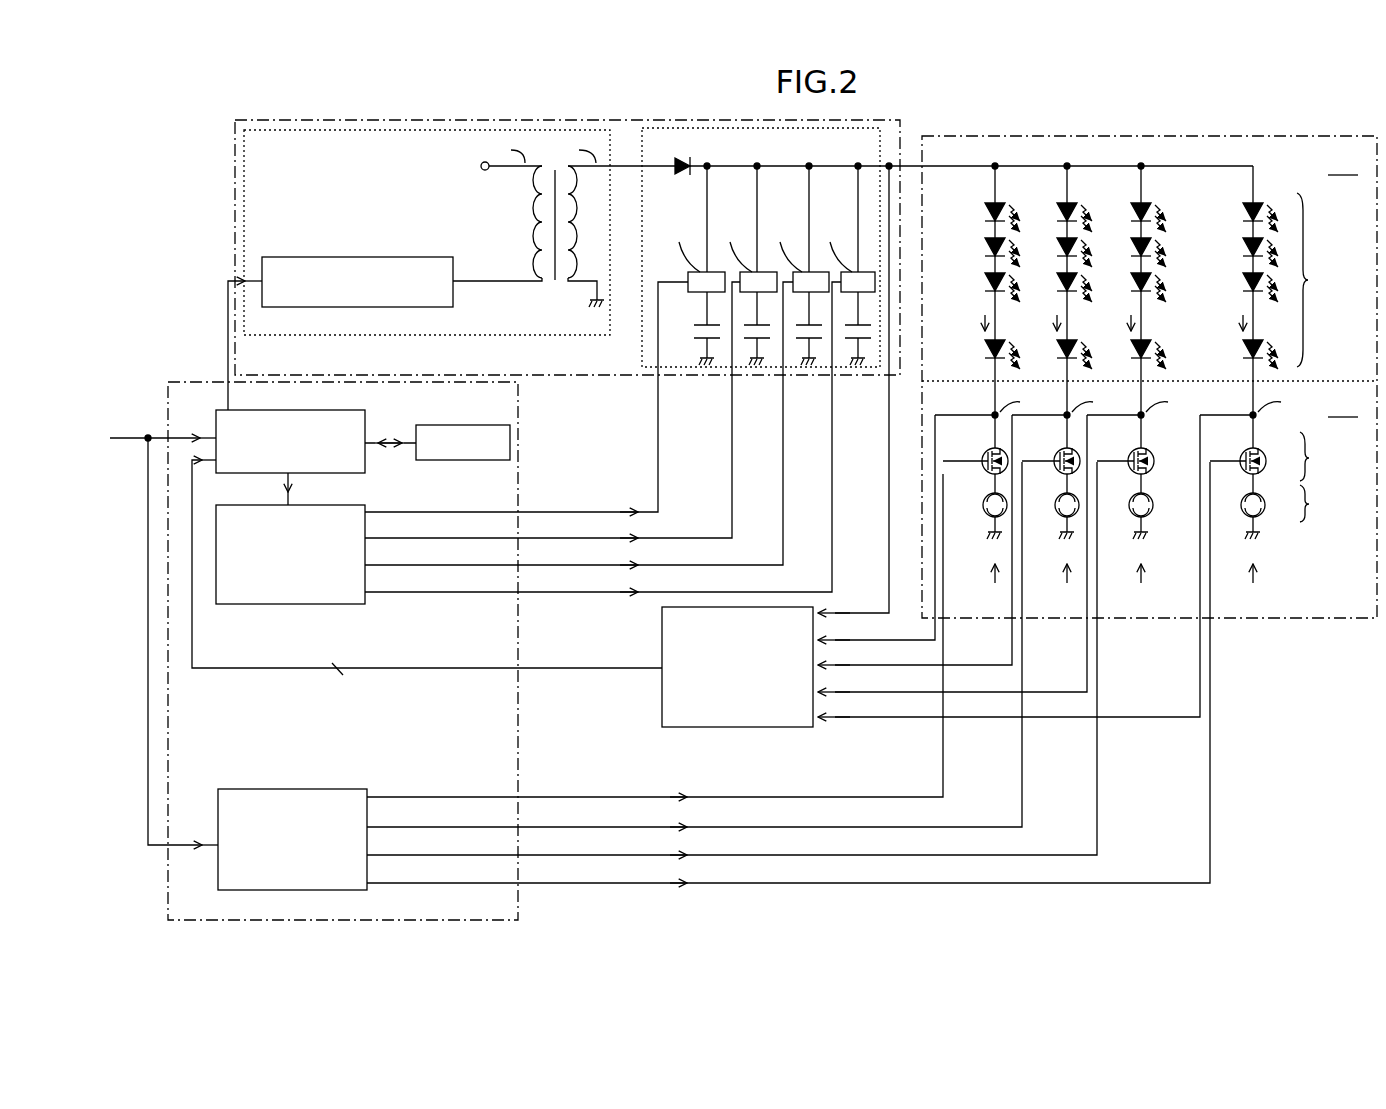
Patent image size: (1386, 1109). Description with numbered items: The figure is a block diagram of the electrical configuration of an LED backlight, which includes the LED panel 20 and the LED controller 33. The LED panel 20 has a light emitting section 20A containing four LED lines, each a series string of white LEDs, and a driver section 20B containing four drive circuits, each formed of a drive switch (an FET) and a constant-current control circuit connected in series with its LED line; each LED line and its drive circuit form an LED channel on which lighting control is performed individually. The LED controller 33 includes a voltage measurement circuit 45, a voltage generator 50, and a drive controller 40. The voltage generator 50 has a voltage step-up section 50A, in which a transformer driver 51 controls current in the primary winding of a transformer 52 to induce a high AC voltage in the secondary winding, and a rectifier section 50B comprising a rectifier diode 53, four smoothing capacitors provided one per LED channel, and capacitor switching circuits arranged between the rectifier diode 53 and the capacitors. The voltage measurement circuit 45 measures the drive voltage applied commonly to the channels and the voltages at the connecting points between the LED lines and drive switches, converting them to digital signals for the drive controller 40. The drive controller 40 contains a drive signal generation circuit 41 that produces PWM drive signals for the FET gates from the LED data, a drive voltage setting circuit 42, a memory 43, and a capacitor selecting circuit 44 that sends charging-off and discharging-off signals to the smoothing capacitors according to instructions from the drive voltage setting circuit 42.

The LED panel 20 is at (1293, 136).
The light emitting section 20A is at (1149, 285).
The driver section 20B is at (1147, 502).
The LED controller 33 is at (145, 196).
The drive controller 40 is at (200, 382).
The drive signal generation circuit 41 is at (242, 789).
The drive voltage setting circuit 42 is at (216, 418).
The memory 43 is at (441, 424).
The capacitor selecting circuit 44 is at (236, 604).
The voltage measurement circuit 45 is at (662, 632).
The voltage generator 50 is at (235, 169).
The voltage step-up section 50A is at (487, 337).
The rectifier section 50B is at (641, 344).
The transformer driver 51 is at (312, 257).
The transformer 52 is at (557, 286).
The rectifier diode 53 is at (683, 158).